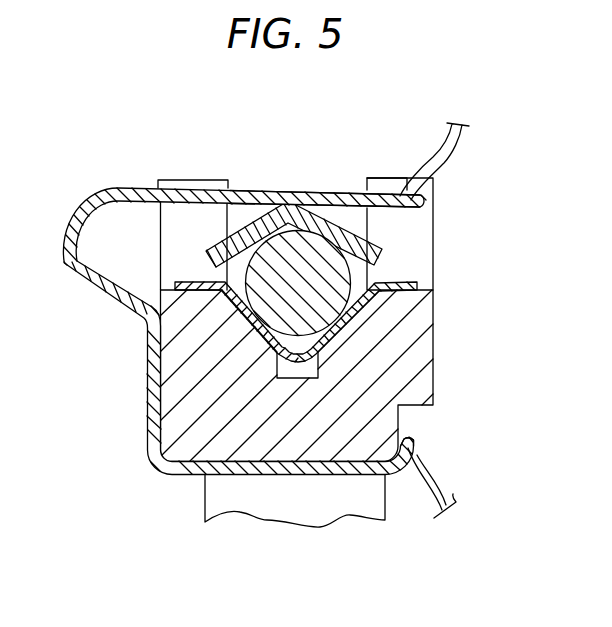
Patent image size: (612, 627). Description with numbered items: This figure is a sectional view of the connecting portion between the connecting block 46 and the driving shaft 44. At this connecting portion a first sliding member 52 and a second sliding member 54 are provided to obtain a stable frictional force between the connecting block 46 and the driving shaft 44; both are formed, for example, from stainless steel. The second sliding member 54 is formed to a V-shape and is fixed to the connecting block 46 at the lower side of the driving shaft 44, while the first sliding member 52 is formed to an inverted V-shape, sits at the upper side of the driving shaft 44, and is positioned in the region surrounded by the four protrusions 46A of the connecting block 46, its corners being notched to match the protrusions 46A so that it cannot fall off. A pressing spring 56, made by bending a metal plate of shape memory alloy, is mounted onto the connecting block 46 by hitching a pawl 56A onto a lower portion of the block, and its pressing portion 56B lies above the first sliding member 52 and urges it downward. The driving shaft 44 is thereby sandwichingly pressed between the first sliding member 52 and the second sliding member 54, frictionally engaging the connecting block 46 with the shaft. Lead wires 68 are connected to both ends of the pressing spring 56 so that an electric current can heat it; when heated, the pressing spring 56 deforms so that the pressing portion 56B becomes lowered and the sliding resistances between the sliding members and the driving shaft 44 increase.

The driving shaft 44 is at (287, 253).
The connecting block 46 is at (186, 382).
The protrusions 46A is at (195, 178).
The first sliding member 52 is at (333, 230).
The second sliding member 54 is at (403, 278).
The pressing spring 56 is at (107, 190).
The pawl 56A is at (413, 439).
The pressing portion 56B is at (300, 197).
The lead wires 68 is at (450, 153).